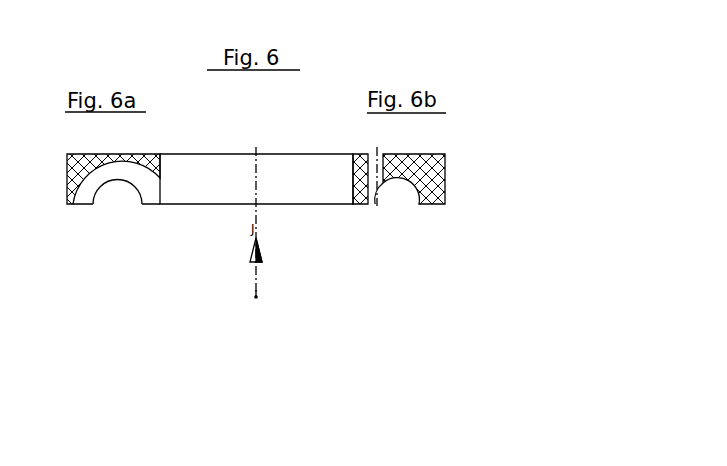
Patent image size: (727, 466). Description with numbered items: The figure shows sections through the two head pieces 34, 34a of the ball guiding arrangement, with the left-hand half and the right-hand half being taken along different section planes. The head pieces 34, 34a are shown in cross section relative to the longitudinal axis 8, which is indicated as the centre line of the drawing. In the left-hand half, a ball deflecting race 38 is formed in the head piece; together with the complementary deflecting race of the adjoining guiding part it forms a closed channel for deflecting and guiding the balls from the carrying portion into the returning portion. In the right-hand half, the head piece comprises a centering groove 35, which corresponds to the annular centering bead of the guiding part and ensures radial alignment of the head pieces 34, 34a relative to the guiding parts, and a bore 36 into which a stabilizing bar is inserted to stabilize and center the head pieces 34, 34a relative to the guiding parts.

In FIG. 6, the head piece 34 is at (388, 106).
In FIG. 6, the head piece 34a is at (313, 173).
In FIG. 6B, the bore 36 is at (377, 150).
In FIG. 6B, the centering groove 35 is at (395, 182).
In FIG. 6, the axis 8 is at (256, 297).
In FIG. 6A, the ball deflecting race 38 is at (103, 172).